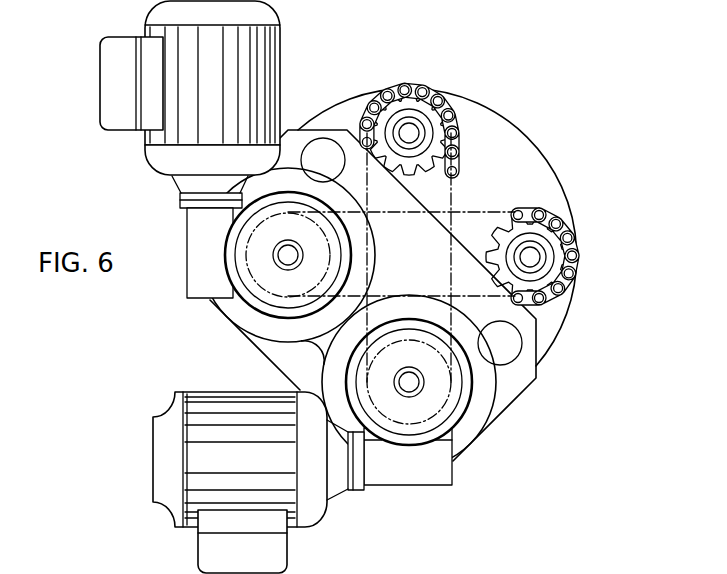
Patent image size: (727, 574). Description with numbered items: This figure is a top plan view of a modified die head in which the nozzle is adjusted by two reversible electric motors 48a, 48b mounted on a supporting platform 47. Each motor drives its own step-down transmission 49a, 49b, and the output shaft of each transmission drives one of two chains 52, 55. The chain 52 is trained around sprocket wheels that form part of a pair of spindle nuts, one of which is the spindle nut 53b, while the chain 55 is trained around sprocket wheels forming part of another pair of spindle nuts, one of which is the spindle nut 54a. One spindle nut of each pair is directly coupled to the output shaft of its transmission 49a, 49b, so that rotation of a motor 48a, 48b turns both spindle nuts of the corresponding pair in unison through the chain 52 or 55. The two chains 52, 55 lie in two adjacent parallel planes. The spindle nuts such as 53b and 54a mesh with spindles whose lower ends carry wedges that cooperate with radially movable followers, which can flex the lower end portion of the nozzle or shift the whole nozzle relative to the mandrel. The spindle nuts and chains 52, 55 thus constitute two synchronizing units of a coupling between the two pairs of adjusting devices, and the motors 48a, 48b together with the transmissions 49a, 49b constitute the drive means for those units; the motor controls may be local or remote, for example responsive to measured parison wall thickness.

The supporting platform 47 is at (432, 277).
The reversible electric motor 48a is at (238, 102).
The reversible electric motor 48b is at (265, 479).
The step-down transmission 49a is at (210, 250).
The step-down transmission 49b is at (452, 400).
The chain 52 is at (563, 233).
The spindle nut 53b is at (558, 266).
The spindle nut 54a is at (420, 124).
The chain 55 is at (374, 92).